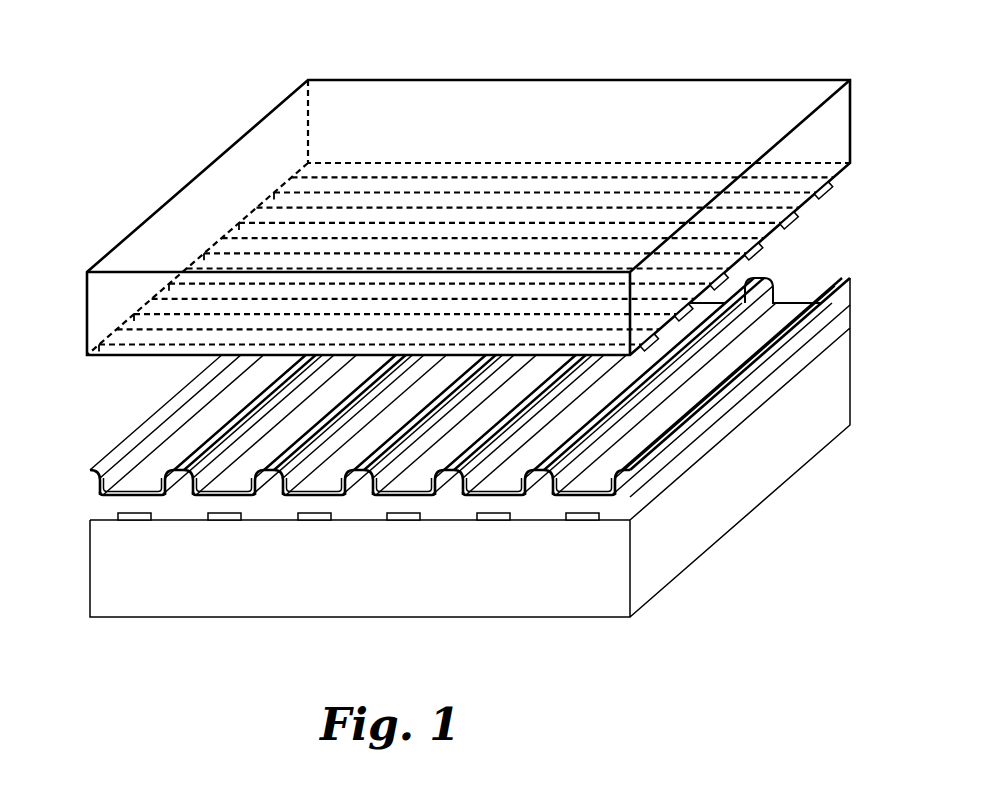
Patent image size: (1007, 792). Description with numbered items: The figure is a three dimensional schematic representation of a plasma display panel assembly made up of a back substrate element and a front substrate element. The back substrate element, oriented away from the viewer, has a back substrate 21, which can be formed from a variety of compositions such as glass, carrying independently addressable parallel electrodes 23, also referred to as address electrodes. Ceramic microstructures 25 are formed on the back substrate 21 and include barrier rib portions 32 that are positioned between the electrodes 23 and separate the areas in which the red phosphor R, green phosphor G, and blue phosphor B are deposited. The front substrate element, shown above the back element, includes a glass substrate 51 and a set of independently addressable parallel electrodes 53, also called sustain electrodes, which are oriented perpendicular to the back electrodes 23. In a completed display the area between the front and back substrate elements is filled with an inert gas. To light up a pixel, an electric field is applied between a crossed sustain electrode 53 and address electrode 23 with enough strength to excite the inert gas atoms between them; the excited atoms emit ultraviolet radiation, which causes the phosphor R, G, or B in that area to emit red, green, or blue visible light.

The back substrate 21 is at (642, 575).
The parallel electrodes 23 is at (500, 519).
The ceramic microstructures 25 is at (615, 510).
The barrier rib portions 32 is at (178, 477).
The red phosphor R is at (253, 494).
The green phosphor G is at (337, 495).
The blue phosphor B is at (422, 497).
The glass substrate 51 is at (809, 97).
The parallel electrodes 53 is at (781, 224).